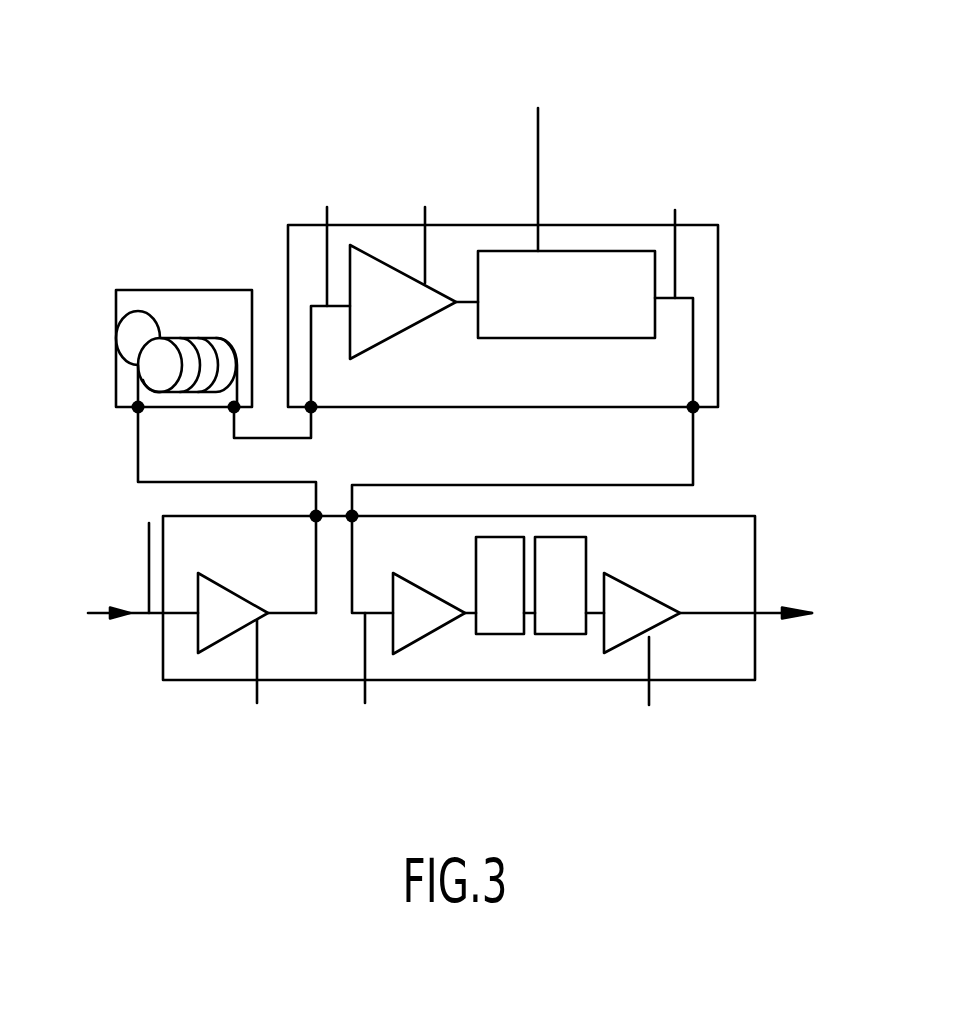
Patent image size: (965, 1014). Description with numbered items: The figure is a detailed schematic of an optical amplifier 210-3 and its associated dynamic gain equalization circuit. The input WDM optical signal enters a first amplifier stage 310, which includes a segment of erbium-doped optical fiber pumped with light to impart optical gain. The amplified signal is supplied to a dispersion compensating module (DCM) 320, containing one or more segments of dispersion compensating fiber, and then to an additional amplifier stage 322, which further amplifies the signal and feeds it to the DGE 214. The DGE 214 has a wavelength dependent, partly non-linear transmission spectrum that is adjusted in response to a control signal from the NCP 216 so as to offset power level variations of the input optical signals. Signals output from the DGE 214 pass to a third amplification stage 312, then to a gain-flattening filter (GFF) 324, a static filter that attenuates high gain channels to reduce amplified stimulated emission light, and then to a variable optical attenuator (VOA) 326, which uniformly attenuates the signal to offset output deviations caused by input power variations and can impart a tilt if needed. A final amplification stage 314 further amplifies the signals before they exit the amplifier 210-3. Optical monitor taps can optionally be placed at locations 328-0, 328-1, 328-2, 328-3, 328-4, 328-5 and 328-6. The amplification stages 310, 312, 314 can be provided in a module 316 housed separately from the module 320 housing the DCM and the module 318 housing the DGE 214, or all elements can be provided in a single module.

The optical amplifier 210-3 is at (489, 425).
The DGE 214 is at (562, 251).
The NCP 216 is at (543, 142).
The first amplifier stage 310 is at (217, 645).
The third amplification stage 312 is at (422, 640).
The amplification stage 314 is at (607, 655).
The module 316 is at (747, 516).
The module 318 is at (620, 225).
The dispersion compensating module (DCM) 320 is at (140, 290).
The additional amplifier stage 322 is at (387, 263).
The gain-flattening filter (GFF) 324 is at (503, 634).
The variable optical attenuator (VOA) 326 is at (560, 634).
The monitor tap location 328-0 is at (149, 563).
The monitor tap location 328-1 is at (272, 679).
The monitor tap location 328-2 is at (367, 676).
The monitor tap location 328-3 is at (660, 690).
The monitor tap location 328-4 is at (690, 233).
The monitor tap location 328-5 is at (440, 226).
The monitor tap location 328-6 is at (328, 237).